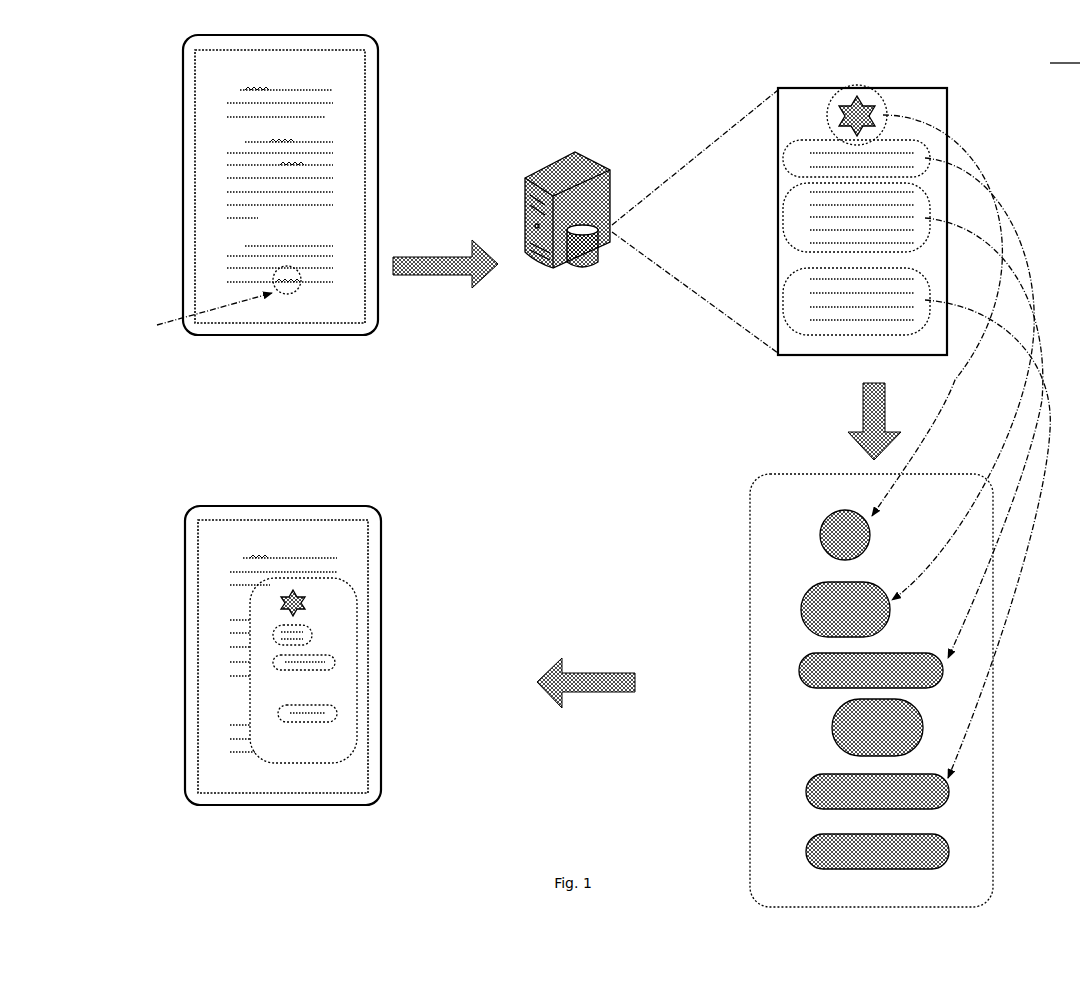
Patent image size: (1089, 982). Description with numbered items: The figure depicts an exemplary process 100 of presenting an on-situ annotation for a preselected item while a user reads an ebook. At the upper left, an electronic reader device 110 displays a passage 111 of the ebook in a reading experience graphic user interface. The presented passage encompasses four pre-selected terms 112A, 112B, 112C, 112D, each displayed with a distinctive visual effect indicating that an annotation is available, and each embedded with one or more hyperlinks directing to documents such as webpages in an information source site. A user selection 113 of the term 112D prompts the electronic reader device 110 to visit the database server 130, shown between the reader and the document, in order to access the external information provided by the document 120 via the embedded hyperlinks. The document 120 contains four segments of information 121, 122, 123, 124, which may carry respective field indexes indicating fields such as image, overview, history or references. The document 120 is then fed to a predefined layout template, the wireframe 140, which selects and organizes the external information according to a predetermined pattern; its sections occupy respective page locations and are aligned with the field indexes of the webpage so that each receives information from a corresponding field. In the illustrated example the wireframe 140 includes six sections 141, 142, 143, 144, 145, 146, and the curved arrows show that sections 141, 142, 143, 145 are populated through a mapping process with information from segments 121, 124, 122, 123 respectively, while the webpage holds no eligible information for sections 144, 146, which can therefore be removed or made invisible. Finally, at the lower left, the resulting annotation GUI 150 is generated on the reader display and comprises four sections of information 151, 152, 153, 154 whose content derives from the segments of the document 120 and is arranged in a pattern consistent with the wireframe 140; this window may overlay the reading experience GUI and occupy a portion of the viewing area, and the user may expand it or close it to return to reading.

The process 100 is at (1065, 55).
The electronic reader device 110 is at (190, 50).
The passage 111 is at (333, 207).
The pre-selected term 112A is at (250, 88).
The pre-selected term 112B is at (285, 142).
The pre-selected term 112C is at (280, 163).
The pre-selected term 112D is at (276, 279).
The user selection 113 is at (152, 314).
The document 120 is at (810, 98).
The segment of information 121 is at (878, 100).
The segment of information 122 is at (918, 148).
The segment of information 123 is at (917, 205).
The segment of information 124 is at (797, 307).
The database server 130 is at (572, 152).
The wireframe 140 is at (799, 505).
The section 141 is at (840, 535).
The section 142 is at (840, 608).
The section 143 is at (820, 672).
The section 144 is at (834, 728).
The section 145 is at (825, 785).
The section 146 is at (810, 845).
The annotation GUI 150 is at (335, 742).
The section of information 151 is at (303, 605).
The section of information 152 is at (313, 633).
The section of information 153 is at (336, 662).
The section of information 154 is at (340, 713).